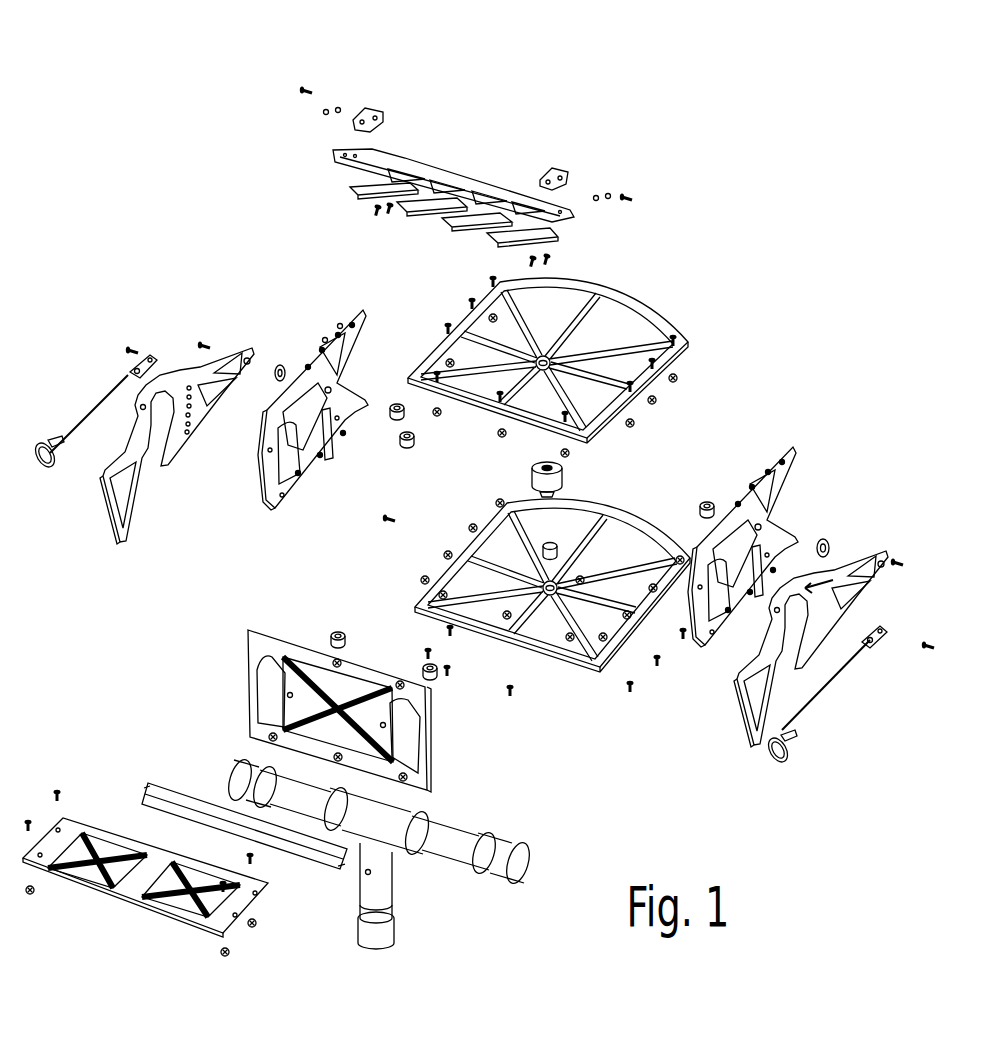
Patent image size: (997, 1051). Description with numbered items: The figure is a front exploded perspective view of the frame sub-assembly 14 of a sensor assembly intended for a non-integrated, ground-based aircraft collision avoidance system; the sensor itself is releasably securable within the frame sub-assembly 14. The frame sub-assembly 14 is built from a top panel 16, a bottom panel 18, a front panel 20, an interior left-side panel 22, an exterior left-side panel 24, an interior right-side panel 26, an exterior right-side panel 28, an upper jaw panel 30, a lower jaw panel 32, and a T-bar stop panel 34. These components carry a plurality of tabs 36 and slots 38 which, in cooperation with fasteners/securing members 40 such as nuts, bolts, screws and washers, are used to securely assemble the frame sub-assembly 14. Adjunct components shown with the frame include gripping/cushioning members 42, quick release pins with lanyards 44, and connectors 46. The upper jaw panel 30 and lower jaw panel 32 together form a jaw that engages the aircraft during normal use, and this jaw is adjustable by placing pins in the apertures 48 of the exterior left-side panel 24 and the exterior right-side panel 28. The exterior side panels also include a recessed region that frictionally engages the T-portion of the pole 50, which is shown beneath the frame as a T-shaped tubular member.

The frame sub-assembly 14 is at (750, 120).
The top panel 16 is at (678, 325).
The bottom panel 18 is at (548, 655).
The front panel 20 is at (297, 660).
The interior left-side panel 22 is at (787, 447).
The exterior left-side panel 24 is at (875, 548).
The interior right-side panel 26 is at (290, 375).
The exterior right-side panel 28 is at (178, 385).
The upper jaw panel 30 is at (457, 170).
The lower jaw panel 32 is at (130, 893).
The T-bar stop panel 34 is at (178, 805).
The tabs 36 is at (338, 322).
The slots 38 is at (457, 320).
The fasteners/securing members 40 is at (575, 472).
The gripping/cushioning members 42 is at (350, 192).
The quick release pins with lanyards 44 is at (85, 405).
The connectors 46 is at (368, 108).
The apertures 48 is at (188, 437).
The pole 50 is at (377, 912).